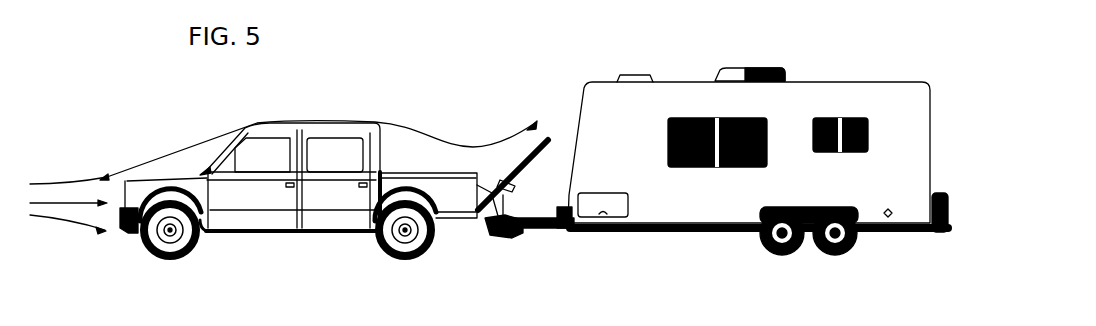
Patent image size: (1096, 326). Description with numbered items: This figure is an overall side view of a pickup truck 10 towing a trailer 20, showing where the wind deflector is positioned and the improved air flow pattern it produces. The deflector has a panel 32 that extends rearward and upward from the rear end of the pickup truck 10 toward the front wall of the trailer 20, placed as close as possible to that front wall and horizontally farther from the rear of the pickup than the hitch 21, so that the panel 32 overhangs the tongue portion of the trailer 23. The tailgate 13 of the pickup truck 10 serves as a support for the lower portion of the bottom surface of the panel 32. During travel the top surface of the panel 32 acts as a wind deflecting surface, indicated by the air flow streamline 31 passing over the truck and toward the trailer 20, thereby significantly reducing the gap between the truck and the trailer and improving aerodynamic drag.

The pickup truck 10 is at (215, 129).
The tailgate 13 is at (502, 197).
The trailer 20 is at (795, 75).
The hitch 21 is at (490, 233).
The tongue portion of the trailer 23 is at (550, 230).
The airflow streamline 31 is at (438, 133).
The panel 32 is at (548, 140).